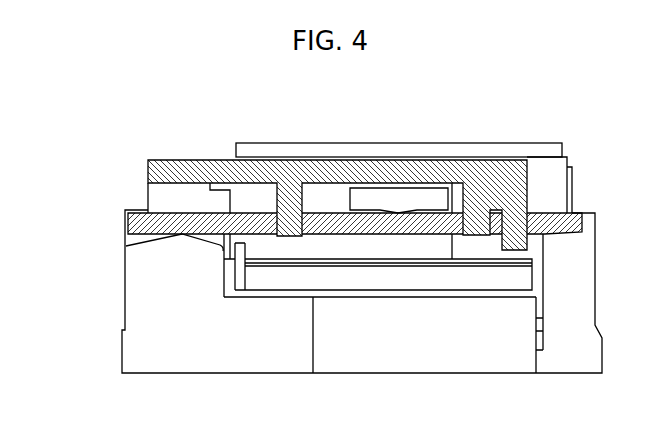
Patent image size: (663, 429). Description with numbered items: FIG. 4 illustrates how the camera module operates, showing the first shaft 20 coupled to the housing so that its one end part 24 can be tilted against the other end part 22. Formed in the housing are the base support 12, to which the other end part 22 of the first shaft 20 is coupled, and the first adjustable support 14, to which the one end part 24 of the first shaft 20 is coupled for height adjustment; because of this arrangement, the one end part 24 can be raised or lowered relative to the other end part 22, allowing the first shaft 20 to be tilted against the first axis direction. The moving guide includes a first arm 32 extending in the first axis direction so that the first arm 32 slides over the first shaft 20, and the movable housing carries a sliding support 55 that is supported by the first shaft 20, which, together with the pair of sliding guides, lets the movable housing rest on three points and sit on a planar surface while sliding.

The base support 12 is at (183, 237).
The first adjustable support 14 is at (547, 236).
The first shaft 20 is at (126, 222).
The other end part 22 is at (184, 234).
The one end part 24 is at (553, 222).
The first arm 32 is at (385, 172).
The sliding support 55 is at (425, 197).